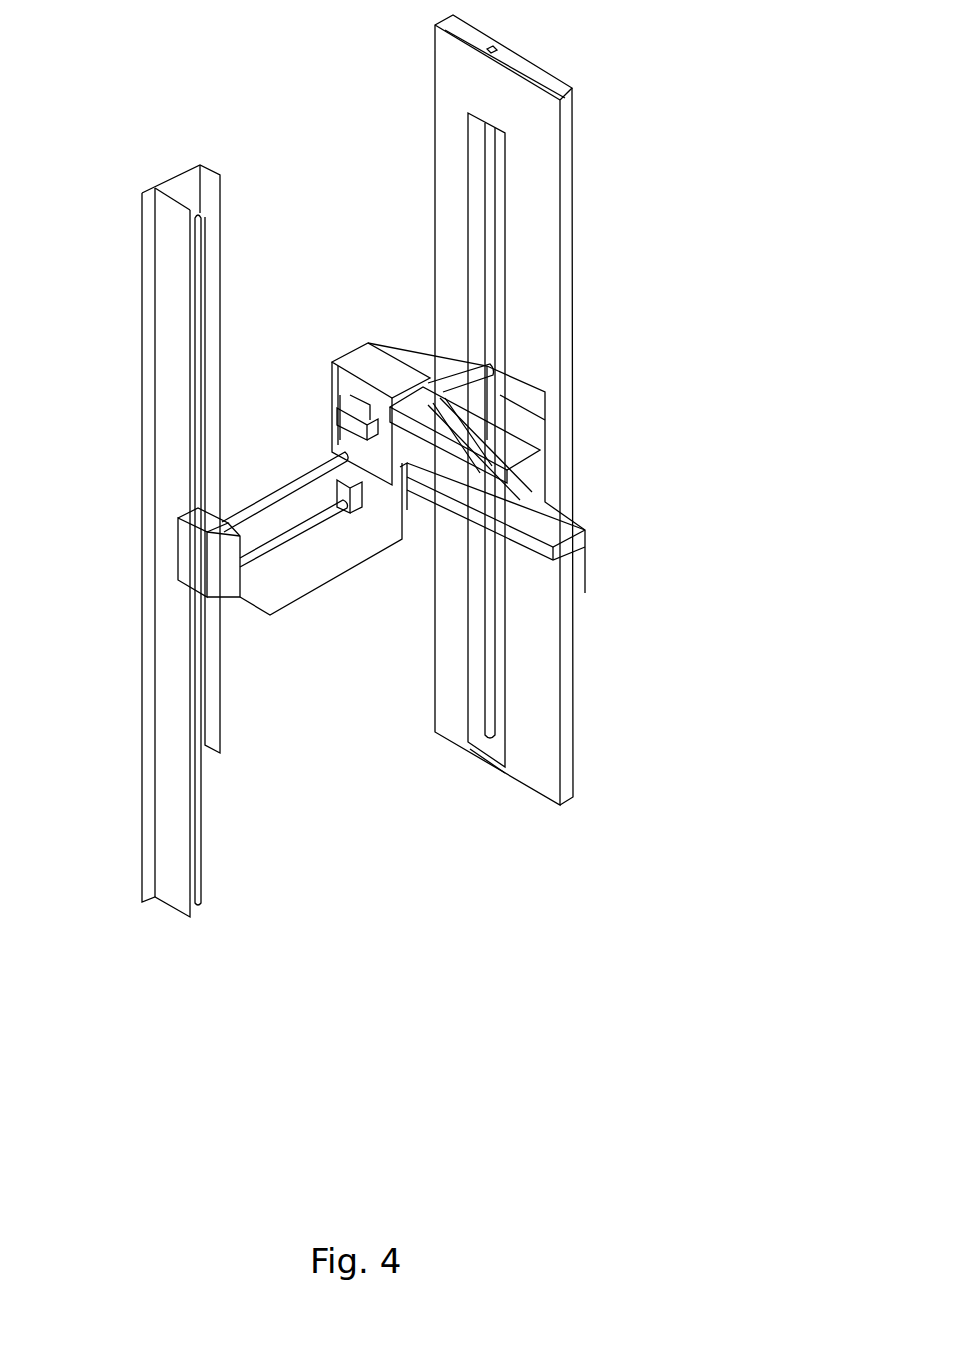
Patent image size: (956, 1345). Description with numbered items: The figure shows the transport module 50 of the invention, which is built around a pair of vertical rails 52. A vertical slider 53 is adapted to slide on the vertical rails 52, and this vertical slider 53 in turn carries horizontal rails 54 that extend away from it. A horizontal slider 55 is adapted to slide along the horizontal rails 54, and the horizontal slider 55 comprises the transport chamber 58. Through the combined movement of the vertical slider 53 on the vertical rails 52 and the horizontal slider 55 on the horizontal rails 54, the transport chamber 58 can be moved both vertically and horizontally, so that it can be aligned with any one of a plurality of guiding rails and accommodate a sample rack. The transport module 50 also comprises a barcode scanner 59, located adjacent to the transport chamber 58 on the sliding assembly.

The transport module 50 is at (252, 72).
The vertical rails 52 is at (208, 776).
The vertical slider 53 is at (202, 561).
The horizontal rails 54 is at (283, 532).
The horizontal slider 55 is at (368, 514).
The transport chamber 58 is at (436, 437).
The barcode scanner 59 is at (334, 432).